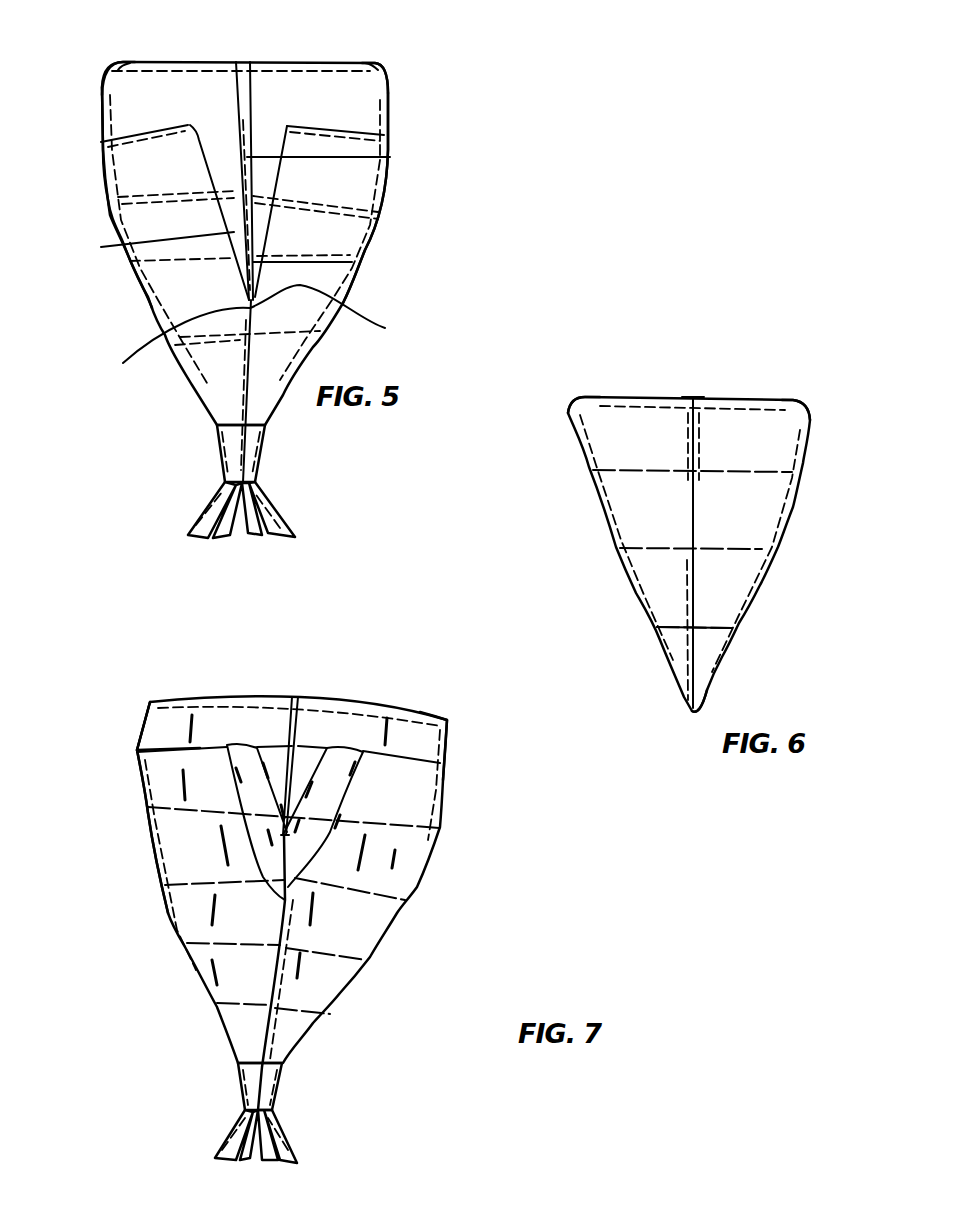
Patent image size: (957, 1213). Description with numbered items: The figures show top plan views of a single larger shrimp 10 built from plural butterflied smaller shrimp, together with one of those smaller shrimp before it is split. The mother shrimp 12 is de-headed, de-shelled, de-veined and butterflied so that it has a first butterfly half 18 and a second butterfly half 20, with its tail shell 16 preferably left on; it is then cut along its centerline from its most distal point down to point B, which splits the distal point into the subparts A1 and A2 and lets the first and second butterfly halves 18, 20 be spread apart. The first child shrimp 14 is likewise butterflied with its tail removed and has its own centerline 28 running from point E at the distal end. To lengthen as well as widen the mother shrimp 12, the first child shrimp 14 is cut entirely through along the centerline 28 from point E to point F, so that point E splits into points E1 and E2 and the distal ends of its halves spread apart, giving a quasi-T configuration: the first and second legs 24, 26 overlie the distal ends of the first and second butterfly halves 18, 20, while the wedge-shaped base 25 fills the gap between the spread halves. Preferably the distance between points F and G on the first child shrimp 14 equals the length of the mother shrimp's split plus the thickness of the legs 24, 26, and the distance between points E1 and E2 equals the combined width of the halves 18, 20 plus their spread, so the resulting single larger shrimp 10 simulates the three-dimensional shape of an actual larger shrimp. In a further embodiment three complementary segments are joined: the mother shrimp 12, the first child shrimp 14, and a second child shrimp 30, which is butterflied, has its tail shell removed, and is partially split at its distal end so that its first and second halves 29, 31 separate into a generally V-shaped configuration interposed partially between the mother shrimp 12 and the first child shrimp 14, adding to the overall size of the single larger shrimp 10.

In FIG. 5, the single larger shrimp 10 is at (485, 77).
In FIG. 7, the single larger shrimp 10 is at (363, 682).
In FIG. 5, the mother shrimp 12 is at (430, 177).
In FIG. 7, the mother shrimp 12 is at (156, 908).
In FIG. 5, the first child shrimp 14 is at (90, 120).
In FIG. 6, the first child shrimp 14 is at (807, 540).
In FIG. 7, the first child shrimp 14 is at (222, 682).
In FIG. 5, the tail shell 16 is at (207, 500).
In FIG. 7, the tail shell 16 is at (272, 1110).
In FIG. 5, the first butterfly half 18 is at (100, 162).
In FIG. 7, the first butterfly half 18 is at (140, 830).
In FIG. 5, the second butterfly half 20 is at (383, 198).
In FIG. 7, the second butterfly half 20 is at (556, 815).
In FIG. 5, the first leg 24 is at (108, 77).
In FIG. 6, the first leg 24 is at (568, 408).
In FIG. 7, the first leg 24 is at (150, 702).
In FIG. 5, the wedge-shaped base 25 is at (101, 247).
In FIG. 7, the wedge-shaped base 25 is at (303, 878).
In FIG. 5, the second leg 26 is at (377, 82).
In FIG. 6, the second leg 26 is at (810, 421).
In FIG. 7, the second leg 26 is at (453, 730).
In FIG. 5, the centerline 28 is at (390, 157).
In FIG. 6, the centerline 28 is at (693, 593).
In FIG. 7, the first half 29 is at (227, 748).
In FIG. 7, the second child shrimp 30 is at (310, 832).
In FIG. 7, the second half 31 is at (347, 770).
In FIG. 6, the point E is at (693, 397).
In FIG. 5, the point E1 is at (130, 62).
In FIG. 5, the point E2 is at (353, 63).
In FIG. 5, the point F is at (237, 62).
In FIG. 6, the point F is at (693, 508).
In FIG. 5, the point A1 is at (190, 125).
In FIG. 5, the point A2 is at (287, 126).
In FIG. 5, the point B is at (370, 322).
In FIG. 5, the point G is at (248, 339).
In FIG. 6, the point G is at (702, 713).